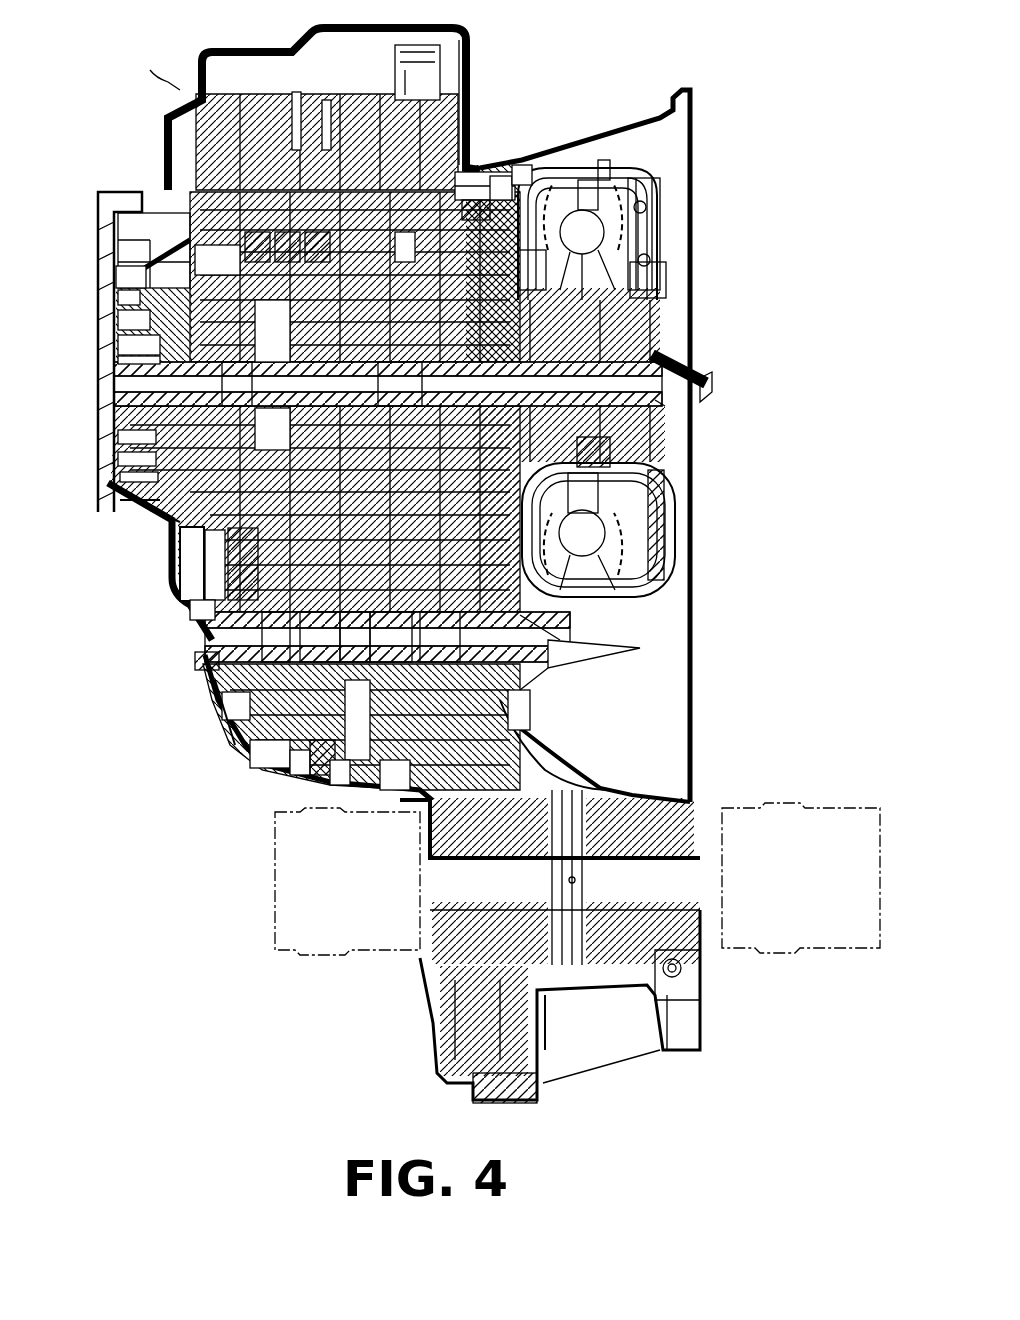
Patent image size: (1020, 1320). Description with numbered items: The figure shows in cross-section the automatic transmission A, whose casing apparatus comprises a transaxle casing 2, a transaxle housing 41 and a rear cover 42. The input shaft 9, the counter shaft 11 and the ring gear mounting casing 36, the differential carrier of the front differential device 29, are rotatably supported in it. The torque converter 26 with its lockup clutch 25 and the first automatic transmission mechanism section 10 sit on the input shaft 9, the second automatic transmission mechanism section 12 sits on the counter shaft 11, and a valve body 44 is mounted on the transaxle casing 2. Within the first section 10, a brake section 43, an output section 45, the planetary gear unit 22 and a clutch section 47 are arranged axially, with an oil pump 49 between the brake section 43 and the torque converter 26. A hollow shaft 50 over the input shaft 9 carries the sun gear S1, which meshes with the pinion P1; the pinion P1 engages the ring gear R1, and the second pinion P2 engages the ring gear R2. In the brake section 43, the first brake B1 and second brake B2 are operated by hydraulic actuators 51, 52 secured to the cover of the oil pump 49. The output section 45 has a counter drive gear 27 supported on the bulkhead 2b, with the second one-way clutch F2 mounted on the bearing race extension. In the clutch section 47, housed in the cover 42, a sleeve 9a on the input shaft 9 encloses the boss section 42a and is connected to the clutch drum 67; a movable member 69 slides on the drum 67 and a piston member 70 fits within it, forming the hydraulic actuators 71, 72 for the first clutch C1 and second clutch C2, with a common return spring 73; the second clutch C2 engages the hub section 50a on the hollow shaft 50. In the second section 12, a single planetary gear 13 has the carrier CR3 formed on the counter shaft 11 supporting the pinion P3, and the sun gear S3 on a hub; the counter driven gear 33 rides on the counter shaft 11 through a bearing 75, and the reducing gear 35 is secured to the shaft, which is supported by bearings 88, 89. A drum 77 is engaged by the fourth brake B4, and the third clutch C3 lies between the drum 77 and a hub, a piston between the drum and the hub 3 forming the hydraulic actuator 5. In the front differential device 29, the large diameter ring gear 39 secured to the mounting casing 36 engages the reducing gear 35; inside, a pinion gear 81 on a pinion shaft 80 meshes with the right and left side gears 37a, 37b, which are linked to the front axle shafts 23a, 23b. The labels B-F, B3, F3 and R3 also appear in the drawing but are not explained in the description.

The automatic transmission A is at (152, 60).
The transaxle casing 2 is at (482, 168).
The bulkhead 2b is at (308, 95).
The hub 3 is at (276, 637).
The hydraulic actuator 5 is at (226, 716).
The input shaft 9 is at (660, 412).
The sleeve 9a is at (120, 344).
The first automatic transmission mechanism section 10 is at (152, 196).
The counter shaft 11 is at (198, 666).
The second automatic transmission mechanism section 12 is at (200, 557).
The single planetary gear 13 is at (330, 770).
The planetary gear unit 22 is at (256, 235).
The left front axle shaft 23a is at (385, 958).
The right front axle shaft 23b is at (774, 960).
The lockup clutch 25 is at (662, 214).
The torque converter 26 is at (604, 164).
The counter drive gear 27 is at (402, 240).
The front differential device 29 is at (622, 800).
The counter driven gear 33 is at (392, 760).
The reducing gear 35 is at (520, 708).
The ring gear mounting casing 36 is at (548, 788).
The left side gear 37a is at (540, 1010).
The right side gear 37b is at (700, 990).
The large diameter ring gear 39 is at (437, 1070).
The transaxle housing 41 is at (604, 128).
The rear cover 42 is at (172, 586).
The boss section 42a is at (120, 364).
The brake section 43 is at (430, 100).
The valve body 44 is at (256, 50).
The output section 45 is at (330, 100).
The clutch section 47 is at (190, 246).
The oil pump 49 is at (528, 166).
The hollow shaft 50 is at (388, 384).
The hub section 50a is at (152, 514).
The hydraulic actuator 51 is at (666, 274).
The hydraulic actuator 52 is at (504, 174).
The clutch drum 67 is at (118, 296).
The movable member 69 is at (118, 461).
The piston member 70 is at (120, 482).
The hydraulic actuator 71 is at (118, 438).
The hydraulic actuator 72 is at (126, 500).
The spring 73 is at (120, 320).
The bearing 75 is at (440, 637).
The drum 77 is at (282, 756).
The pinion shaft 80 is at (572, 960).
The pinion gear 81 is at (606, 955).
The bearing 88 is at (204, 706).
The bearing 89 is at (580, 667).
The band / one-way clutch B-F is at (400, 384).
The first brake B1 is at (532, 270).
The second brake B2 is at (476, 172).
The third brake B3 is at (286, 235).
The fourth brake B4 is at (318, 770).
The first clutch C1 is at (217, 250).
The second clutch C2 is at (116, 274).
The third clutch C3 is at (255, 761).
The carrier CR3 is at (390, 637).
The second one-way clutch F2 is at (316, 235).
The third one-way clutch F3 is at (192, 606).
The pinion P1 is at (272, 347).
The second pinion P2 is at (272, 429).
The pinion P3 is at (355, 637).
The ring gear R1 is at (207, 554).
The ring gear R2 is at (243, 554).
The third ring gear R3 is at (345, 750).
The sun gear S1 is at (237, 384).
The sun gear S3 is at (320, 637).